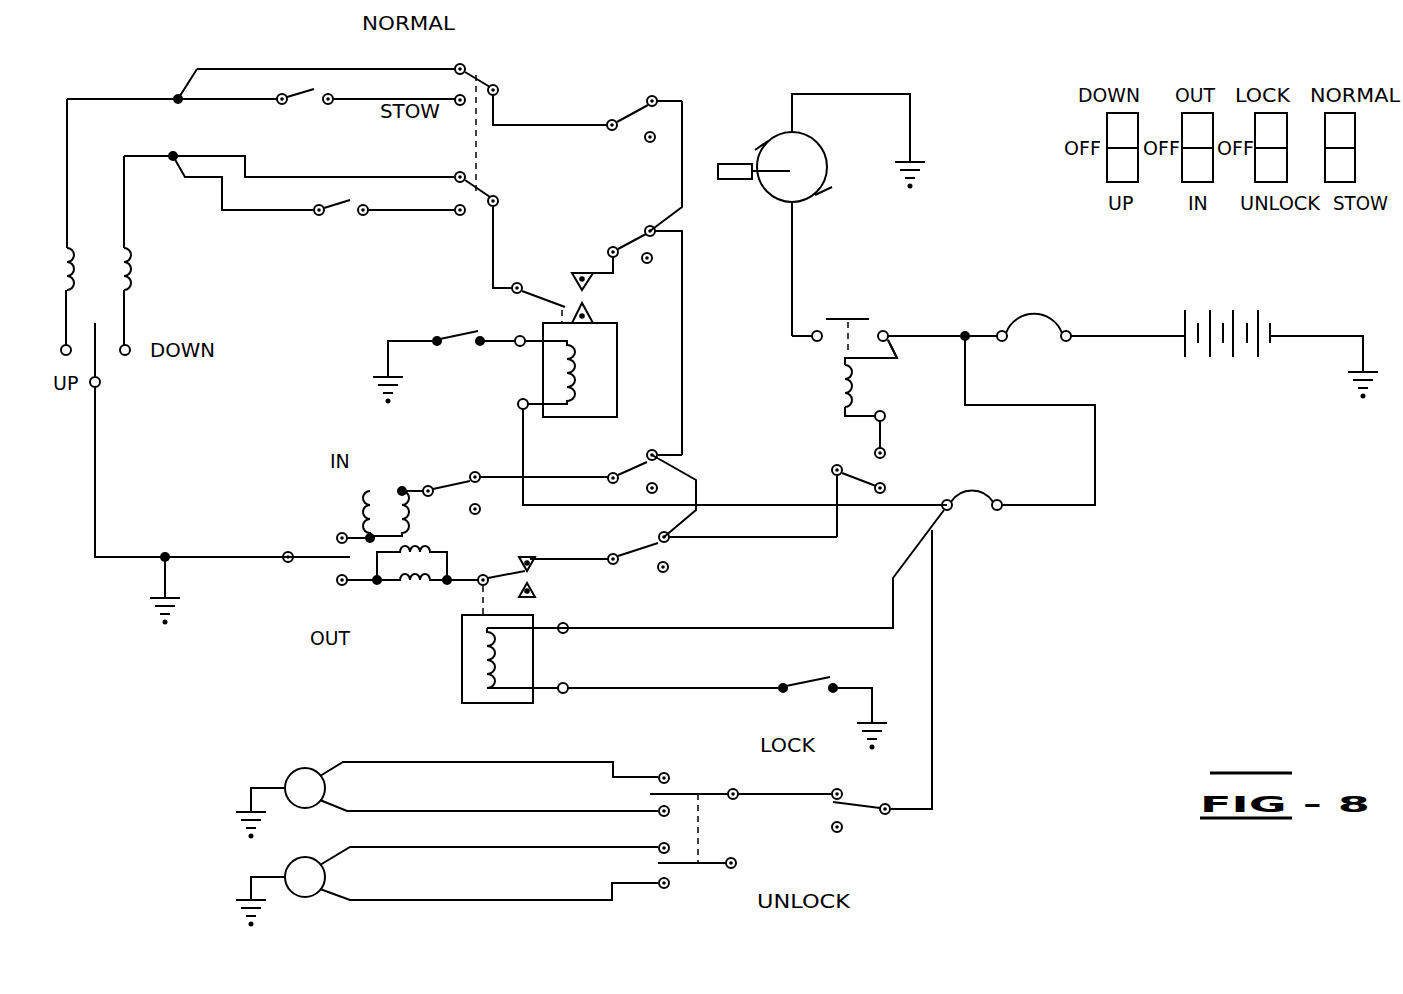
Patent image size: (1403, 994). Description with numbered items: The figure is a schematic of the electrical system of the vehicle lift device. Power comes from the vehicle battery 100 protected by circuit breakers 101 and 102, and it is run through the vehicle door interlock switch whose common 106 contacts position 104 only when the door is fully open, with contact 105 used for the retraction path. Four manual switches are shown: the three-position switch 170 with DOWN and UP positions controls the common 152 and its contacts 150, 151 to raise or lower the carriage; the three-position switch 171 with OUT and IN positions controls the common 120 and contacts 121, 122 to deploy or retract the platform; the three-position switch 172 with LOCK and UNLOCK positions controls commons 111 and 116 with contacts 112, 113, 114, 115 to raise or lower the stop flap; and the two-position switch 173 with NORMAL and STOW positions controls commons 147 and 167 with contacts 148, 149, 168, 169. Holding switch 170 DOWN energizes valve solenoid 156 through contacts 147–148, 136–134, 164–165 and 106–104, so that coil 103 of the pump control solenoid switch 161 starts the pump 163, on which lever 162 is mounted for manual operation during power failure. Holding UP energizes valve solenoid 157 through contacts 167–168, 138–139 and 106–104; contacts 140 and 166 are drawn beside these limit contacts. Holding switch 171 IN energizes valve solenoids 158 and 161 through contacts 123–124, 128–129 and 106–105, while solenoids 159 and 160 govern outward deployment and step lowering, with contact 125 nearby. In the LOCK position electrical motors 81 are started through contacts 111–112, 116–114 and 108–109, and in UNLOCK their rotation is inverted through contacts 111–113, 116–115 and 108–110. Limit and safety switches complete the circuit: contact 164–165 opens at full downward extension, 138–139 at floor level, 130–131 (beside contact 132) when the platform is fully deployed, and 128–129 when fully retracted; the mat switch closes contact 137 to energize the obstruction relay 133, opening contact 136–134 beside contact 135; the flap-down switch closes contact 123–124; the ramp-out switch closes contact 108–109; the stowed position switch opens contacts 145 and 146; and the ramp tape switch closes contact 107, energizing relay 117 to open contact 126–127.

The electrical motor 81 is at (310, 768).
The vehicle battery 100 is at (1248, 305).
The circuit breaker 101 is at (1030, 312).
The circuit breaker 102 is at (1003, 504).
The coil of the pump control solenoid switch 103 is at (840, 370).
The door interlock switch position 104 is at (886, 455).
The door interlock switch contact 105 is at (886, 492).
The common of the door interlock switch 106 is at (852, 448).
The tape switch contact 107 is at (788, 684).
The ramp-out limit switch contact 108 is at (883, 815).
The ramp-out limit switch contact 109 is at (856, 772).
The switch contact 110 is at (842, 834).
The common 111 is at (722, 792).
The switch contact 112 is at (676, 750).
The switch contact 113 is at (656, 814).
The switch contact 114 is at (658, 852).
The switch contact 115 is at (663, 890).
The common 116 is at (706, 870).
The relay 117 is at (500, 708).
The common 120 is at (308, 554).
The switch contact 121 is at (340, 530).
The switch contact 122 is at (347, 586).
The flap-down limit switch contact 123 is at (448, 473).
The flap-down limit switch contact 124 is at (485, 465).
The switch contact 125 is at (485, 512).
The relay contact 126 is at (488, 574).
The relay contact 127 is at (528, 560).
The inward limit switch contact 128 is at (630, 476).
The inward limit switch contact 129 is at (672, 440).
The outward limit switch contact 130 is at (624, 540).
The outward limit switch contact 131 is at (668, 533).
The switch contact 132 is at (665, 573).
The obstruction relay 133 is at (590, 378).
The obstruction relay contact 134 is at (596, 280).
The relay contact 135 is at (594, 318).
The obstruction relay contact 136 is at (552, 272).
The mat-type contact switch contact 137 is at (452, 332).
The up limit switch contact 138 is at (614, 118).
The up limit switch contact 139 is at (656, 88).
The switch contact 140 is at (655, 142).
The stowed position switch contact 145 is at (312, 103).
The stowed position switch contact 146 is at (342, 216).
The common 147 is at (478, 198).
The switch contact 148 is at (455, 172).
The switch contact 149 is at (464, 214).
The switch contact 150 is at (70, 344).
The switch contact 151 is at (130, 344).
The common 152 is at (101, 383).
The valve solenoid 156 is at (132, 262).
The valve solenoid 157 is at (74, 262).
The valve solenoid 158 is at (364, 503).
The valve solenoid 159 is at (428, 585).
The valve solenoid 160 is at (410, 552).
The valve solenoid / pump control solenoid switch 161 is at (408, 510).
The lever 162 is at (735, 162).
The pump 163 is at (822, 162).
The down limit switch contact 164 is at (616, 246).
The down limit switch contact 165 is at (658, 225).
The switch contact 166 is at (652, 264).
The common 167 is at (478, 92).
The switch contact 168 is at (458, 62).
The switch contact 169 is at (462, 106).
The three-position switch 170 is at (1107, 168).
The three-position switch 171 is at (1182, 152).
The three-position switch 172 is at (1287, 148).
The two-position switch 173 is at (1356, 148).